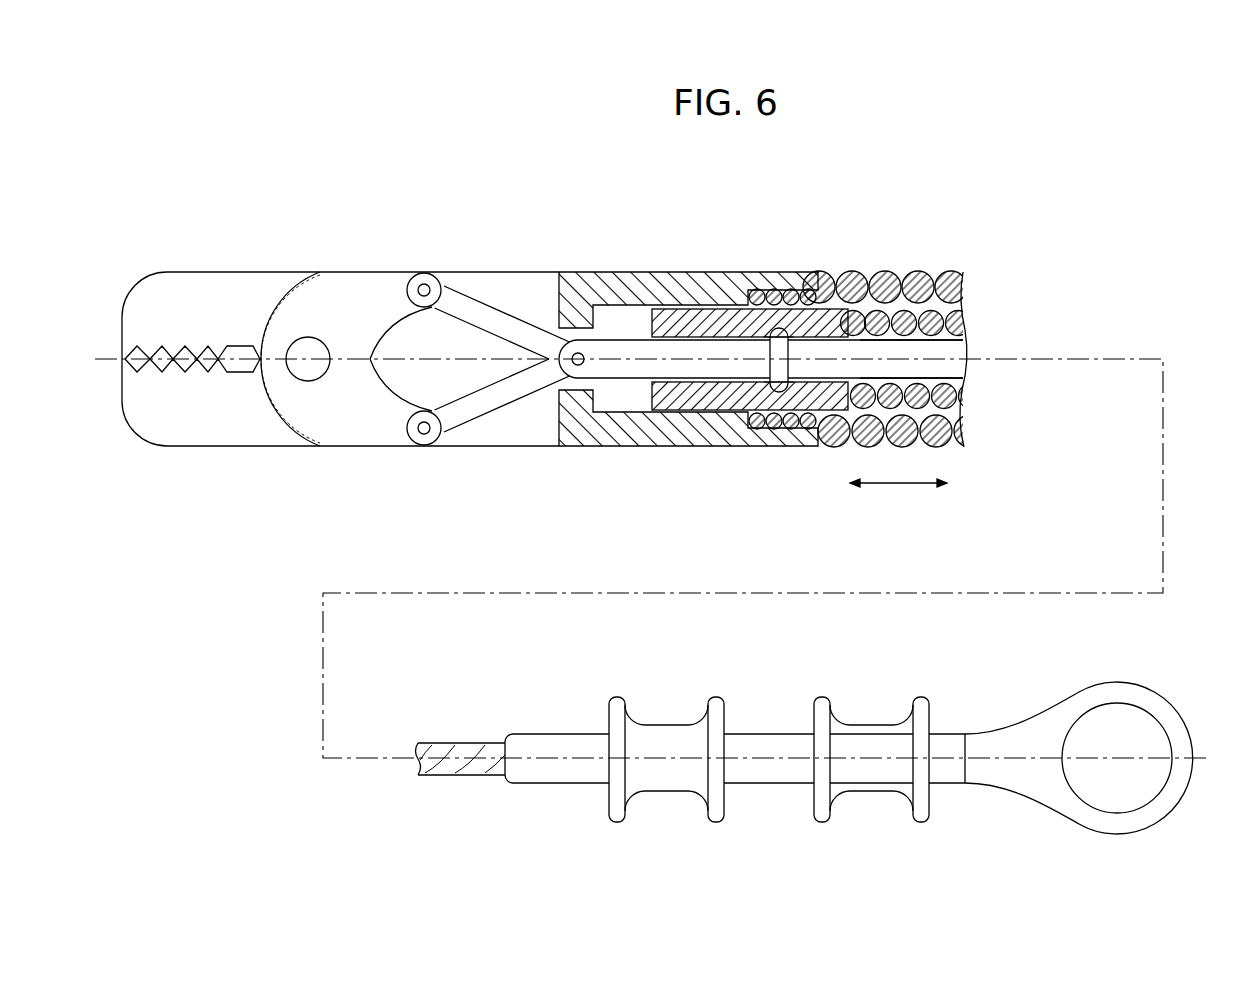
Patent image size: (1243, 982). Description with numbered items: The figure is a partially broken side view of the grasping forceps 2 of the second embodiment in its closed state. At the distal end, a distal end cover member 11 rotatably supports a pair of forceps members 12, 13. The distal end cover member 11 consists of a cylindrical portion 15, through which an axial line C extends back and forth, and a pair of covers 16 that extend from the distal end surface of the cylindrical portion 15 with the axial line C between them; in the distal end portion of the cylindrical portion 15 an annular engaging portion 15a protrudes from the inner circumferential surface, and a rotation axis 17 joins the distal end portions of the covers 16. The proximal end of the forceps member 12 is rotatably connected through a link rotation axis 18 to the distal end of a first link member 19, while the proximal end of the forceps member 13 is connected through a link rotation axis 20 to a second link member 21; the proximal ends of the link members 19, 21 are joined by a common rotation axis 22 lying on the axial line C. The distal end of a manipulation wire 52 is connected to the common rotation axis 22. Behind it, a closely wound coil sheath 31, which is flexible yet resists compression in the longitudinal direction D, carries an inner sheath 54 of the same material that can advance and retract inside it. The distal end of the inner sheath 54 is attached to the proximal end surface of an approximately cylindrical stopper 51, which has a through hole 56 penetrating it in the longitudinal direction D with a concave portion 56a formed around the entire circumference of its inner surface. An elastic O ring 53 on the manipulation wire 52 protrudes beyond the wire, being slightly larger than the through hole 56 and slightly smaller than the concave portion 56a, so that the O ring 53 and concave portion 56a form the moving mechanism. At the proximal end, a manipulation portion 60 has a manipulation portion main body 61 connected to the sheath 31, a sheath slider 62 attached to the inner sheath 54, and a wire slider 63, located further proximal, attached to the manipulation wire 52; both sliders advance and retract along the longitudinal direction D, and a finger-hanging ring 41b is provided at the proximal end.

The grasping forceps 2 is at (150, 215).
The distal end cover member 11 is at (625, 222).
The forceps member 12 is at (180, 282).
The forceps member 13 is at (176, 435).
The cylindrical portion 15 is at (678, 361).
The annular engaging portion 15a is at (560, 400).
The cover 16 is at (523, 282).
The rotation axis 17 is at (317, 375).
The link rotation axis 18 is at (424, 440).
The link member 19 is at (487, 410).
The link rotation axis 20 is at (424, 284).
The link member 21 is at (463, 303).
The common rotation axis 22 is at (580, 364).
The sheath 31 is at (915, 268).
The stopper 51 is at (762, 395).
The manipulation wire 52 is at (963, 347).
The O ring 53 is at (777, 328).
The inner sheath 54 is at (963, 320).
The through hole 56 is at (728, 385).
The concave portion 56a is at (786, 385).
The manipulation portion 60 is at (823, 723).
The manipulation portion main body 61 is at (786, 740).
The sheath slider 62 is at (665, 727).
The wire slider 63 is at (866, 727).
The finger-hanging ring 41b is at (1175, 718).
The axial line C is at (1137, 355).
The longitudinal direction D is at (898, 497).